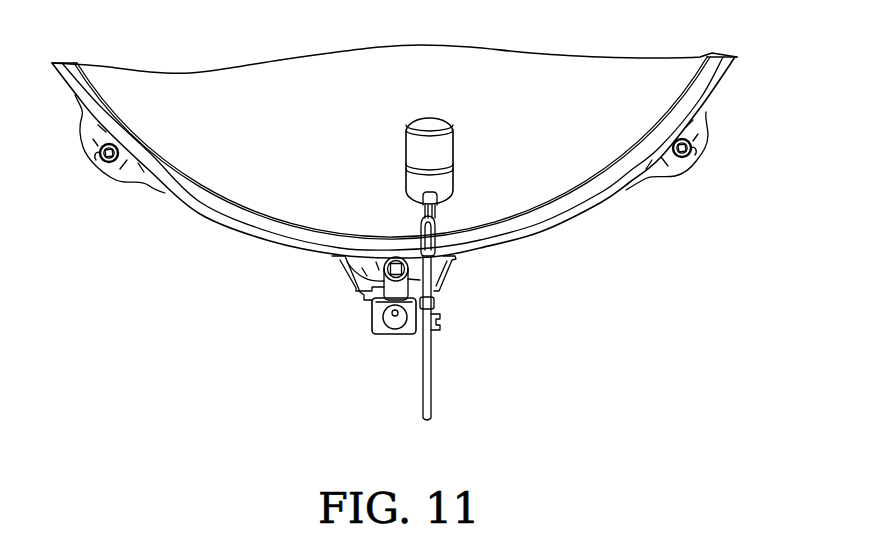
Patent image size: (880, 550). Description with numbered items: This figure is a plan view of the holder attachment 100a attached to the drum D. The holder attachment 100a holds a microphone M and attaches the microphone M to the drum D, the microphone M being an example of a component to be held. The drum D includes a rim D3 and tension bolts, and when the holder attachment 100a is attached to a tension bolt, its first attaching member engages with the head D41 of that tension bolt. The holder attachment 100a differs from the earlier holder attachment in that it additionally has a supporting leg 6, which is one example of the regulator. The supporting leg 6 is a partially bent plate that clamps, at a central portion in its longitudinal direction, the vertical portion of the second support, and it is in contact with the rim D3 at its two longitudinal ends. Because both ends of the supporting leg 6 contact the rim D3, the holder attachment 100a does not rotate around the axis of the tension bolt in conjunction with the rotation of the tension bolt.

The drum D is at (596, 219).
The rim D3 is at (216, 209).
The head D41 is at (95, 167).
The microphone M is at (397, 152).
The supporting leg 6 is at (348, 284).
The holder attachment 100a is at (395, 348).